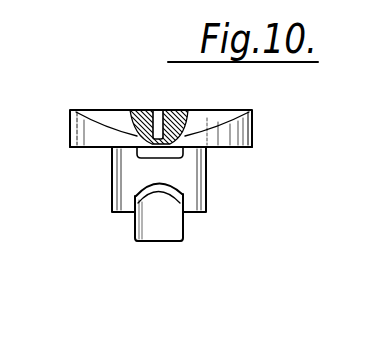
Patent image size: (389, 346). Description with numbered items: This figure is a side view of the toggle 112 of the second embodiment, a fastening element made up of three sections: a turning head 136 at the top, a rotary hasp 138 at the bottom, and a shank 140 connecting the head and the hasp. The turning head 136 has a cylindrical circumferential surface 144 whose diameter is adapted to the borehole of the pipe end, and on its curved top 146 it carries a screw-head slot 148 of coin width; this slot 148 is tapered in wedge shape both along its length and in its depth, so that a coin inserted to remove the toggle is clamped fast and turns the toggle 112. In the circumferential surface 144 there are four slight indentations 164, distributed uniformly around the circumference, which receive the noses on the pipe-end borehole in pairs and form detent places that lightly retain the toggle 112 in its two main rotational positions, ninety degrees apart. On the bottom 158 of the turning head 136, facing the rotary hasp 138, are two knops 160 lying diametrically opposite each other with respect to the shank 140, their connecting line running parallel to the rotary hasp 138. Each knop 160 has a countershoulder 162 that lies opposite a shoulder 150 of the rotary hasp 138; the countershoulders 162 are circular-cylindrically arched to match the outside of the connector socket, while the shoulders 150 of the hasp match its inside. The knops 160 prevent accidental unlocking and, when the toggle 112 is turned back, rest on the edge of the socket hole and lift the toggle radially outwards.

The toggle 112 is at (175, 248).
The turning head 136 is at (204, 105).
The rotary hasp 138 is at (189, 227).
The shank 140 is at (186, 175).
The circumferential surface 144 is at (68, 134).
The top 146 is at (109, 109).
The screw-head slot 148 is at (160, 110).
The shoulder 150 is at (165, 183).
The bottom 158 is at (87, 149).
The knop 160 is at (153, 161).
The countershoulder 162 is at (155, 183).
The indentation 164 is at (88, 110).